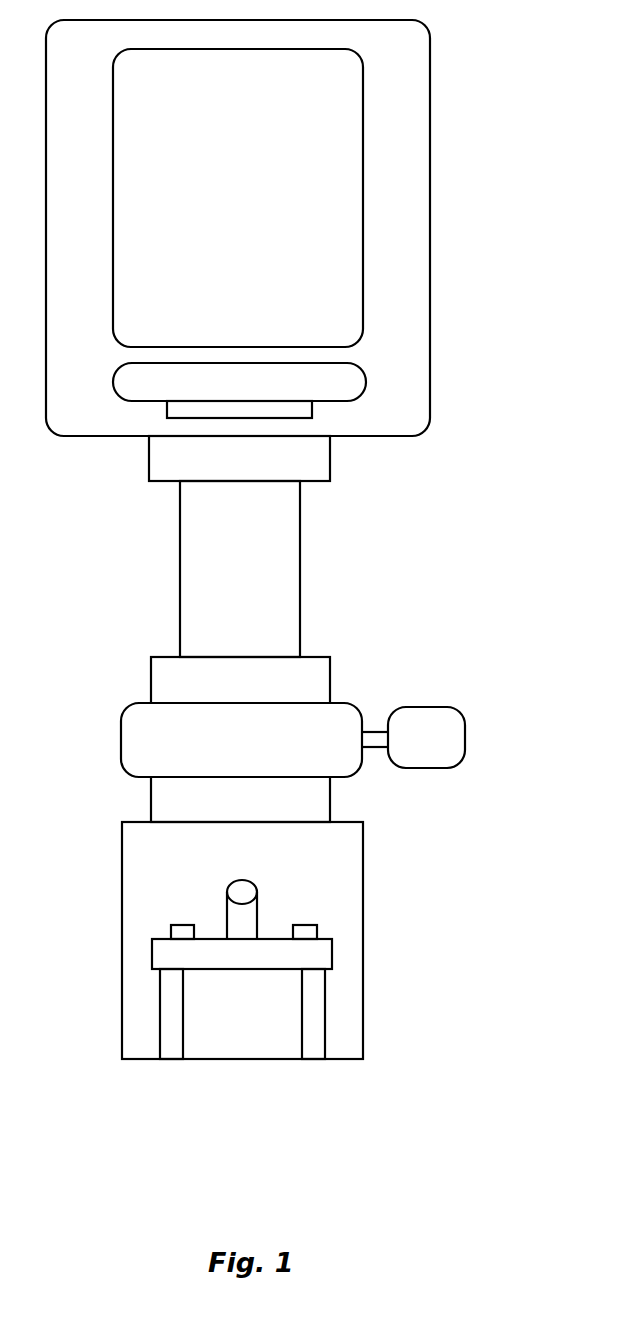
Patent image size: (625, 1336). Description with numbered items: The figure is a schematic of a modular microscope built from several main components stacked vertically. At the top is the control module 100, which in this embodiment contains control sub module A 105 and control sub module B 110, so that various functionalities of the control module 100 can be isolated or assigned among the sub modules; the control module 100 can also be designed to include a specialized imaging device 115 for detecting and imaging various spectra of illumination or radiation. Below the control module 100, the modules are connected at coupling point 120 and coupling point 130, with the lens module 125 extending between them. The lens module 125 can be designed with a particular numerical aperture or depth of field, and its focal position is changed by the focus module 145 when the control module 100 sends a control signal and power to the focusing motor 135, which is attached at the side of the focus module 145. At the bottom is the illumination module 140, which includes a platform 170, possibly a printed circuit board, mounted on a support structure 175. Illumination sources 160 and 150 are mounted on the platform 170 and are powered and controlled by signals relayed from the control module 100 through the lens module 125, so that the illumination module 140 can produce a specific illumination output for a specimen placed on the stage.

The control module 100 is at (430, 22).
The control sub module A 105 is at (363, 198).
The control sub module B 110 is at (366, 380).
The imaging device 115 is at (312, 415).
The coupling point 120 is at (330, 455).
The lens module 125 is at (300, 568).
The coupling point 130 is at (330, 670).
The focusing motor 135 is at (465, 737).
The illumination module 140 is at (363, 940).
The focus module 145 is at (121, 738).
The illumination source 150 is at (232, 887).
The illumination source 160 is at (171, 930).
The platform 170 is at (152, 952).
The support structure 175 is at (160, 1012).